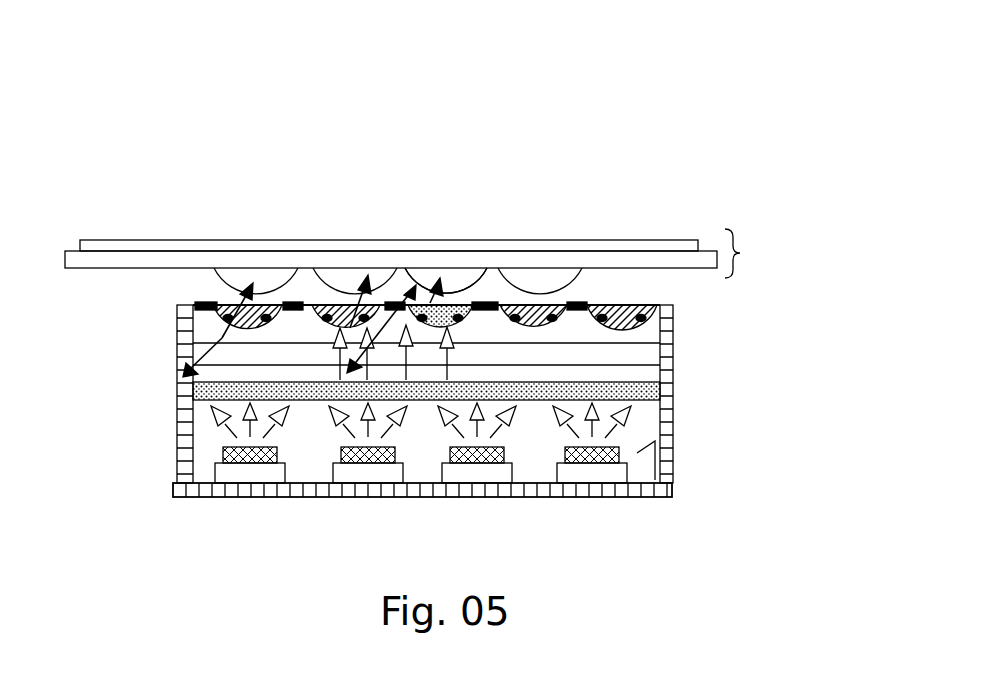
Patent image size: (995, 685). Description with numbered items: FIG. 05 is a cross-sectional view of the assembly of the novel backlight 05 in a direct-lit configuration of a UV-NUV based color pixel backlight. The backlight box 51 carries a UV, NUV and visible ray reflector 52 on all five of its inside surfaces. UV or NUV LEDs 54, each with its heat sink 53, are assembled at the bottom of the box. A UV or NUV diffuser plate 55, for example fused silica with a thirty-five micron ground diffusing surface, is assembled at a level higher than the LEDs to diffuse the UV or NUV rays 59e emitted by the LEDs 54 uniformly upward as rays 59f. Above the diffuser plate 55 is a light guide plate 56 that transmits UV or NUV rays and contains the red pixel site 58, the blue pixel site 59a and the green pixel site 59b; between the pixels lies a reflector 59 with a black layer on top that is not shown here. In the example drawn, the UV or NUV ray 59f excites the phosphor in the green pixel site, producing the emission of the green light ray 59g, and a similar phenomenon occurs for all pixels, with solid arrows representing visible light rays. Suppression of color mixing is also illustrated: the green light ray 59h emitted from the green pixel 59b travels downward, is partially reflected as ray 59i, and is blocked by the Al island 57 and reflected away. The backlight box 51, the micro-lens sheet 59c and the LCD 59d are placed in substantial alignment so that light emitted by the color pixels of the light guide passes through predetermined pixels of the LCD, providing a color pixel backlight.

The lighting module 05 is at (515, 23).
The backlight box 51 is at (310, 450).
The UV, NUV and visible ray reflector 52 is at (577, 496).
The heat sink 53 is at (229, 472).
The UV or NUV LED 54 is at (222, 447).
The UV or NUV diffuser plate 55 is at (180, 380).
The light guide plate 56 is at (645, 334).
The Al island 57 is at (563, 320).
The red pixel site 58 is at (240, 310).
The reflector 59 is at (583, 290).
The blue pixel site 59a is at (347, 337).
The green pixel site 59b is at (438, 292).
The micro-lens sheet 59c is at (460, 280).
The LCD 59d is at (747, 241).
The UV or NUV rays 59e is at (642, 420).
The diffused UV or NUV rays 59f is at (673, 365).
The green light ray 59g is at (448, 302).
The green light ray 59h is at (343, 303).
The reflected ray 59i is at (302, 357).